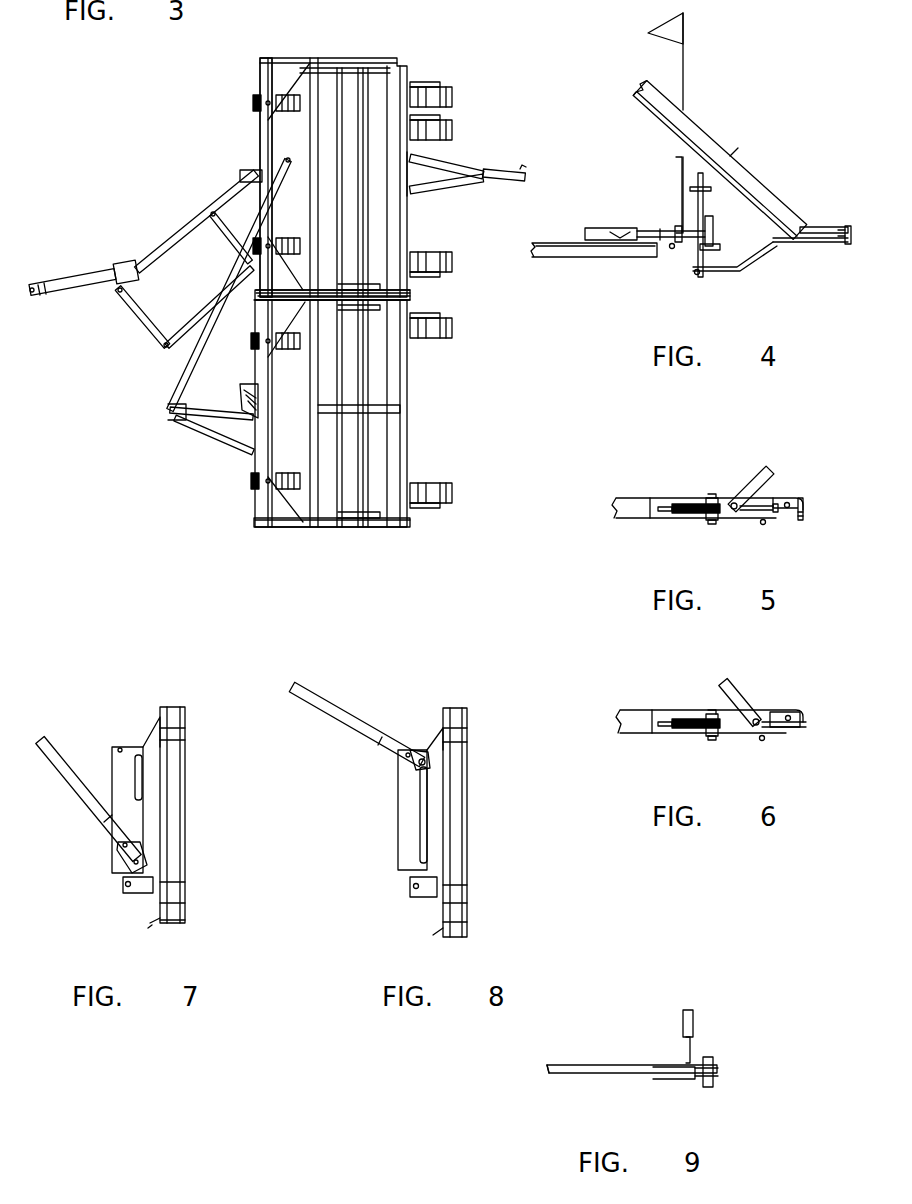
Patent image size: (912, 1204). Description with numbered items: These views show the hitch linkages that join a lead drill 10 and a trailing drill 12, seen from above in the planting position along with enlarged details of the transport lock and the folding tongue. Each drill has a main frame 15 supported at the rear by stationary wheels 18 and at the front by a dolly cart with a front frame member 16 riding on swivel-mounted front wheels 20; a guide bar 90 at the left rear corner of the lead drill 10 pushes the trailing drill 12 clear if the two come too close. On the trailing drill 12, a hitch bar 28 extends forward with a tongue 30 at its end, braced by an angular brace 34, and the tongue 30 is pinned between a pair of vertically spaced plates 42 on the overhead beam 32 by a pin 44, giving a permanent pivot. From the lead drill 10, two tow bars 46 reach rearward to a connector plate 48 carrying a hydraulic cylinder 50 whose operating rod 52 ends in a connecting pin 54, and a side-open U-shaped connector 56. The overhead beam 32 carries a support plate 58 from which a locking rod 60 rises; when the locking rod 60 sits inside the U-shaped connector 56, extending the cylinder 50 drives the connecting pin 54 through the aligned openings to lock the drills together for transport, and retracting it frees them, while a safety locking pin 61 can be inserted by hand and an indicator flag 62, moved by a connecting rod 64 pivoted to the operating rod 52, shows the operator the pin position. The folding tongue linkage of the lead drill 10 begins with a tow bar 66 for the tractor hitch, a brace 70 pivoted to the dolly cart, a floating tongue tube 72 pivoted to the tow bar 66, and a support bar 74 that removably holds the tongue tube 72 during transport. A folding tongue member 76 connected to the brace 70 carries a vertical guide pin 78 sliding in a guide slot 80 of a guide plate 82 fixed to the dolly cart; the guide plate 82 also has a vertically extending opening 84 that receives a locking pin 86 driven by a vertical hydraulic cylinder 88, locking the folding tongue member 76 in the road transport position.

In FIG. 3, the lead drill 10 is at (378, 48).
In FIG. 3, the trailing drill 12 is at (418, 382).
In FIG. 3, the main frame 15 is at (258, 150).
In FIG. 3, the front frame member 16 is at (258, 82).
In FIG. 7, the front frame member 16 is at (180, 838).
In FIG. 8, the front frame member 16 is at (460, 804).
In FIG. 3, the stationary wheels 18 is at (453, 96).
In FIG. 3, the front wheels 20 is at (292, 112).
In FIG. 3, the hitch bar 28 is at (200, 414).
In FIG. 3, the tongue 30 is at (246, 394).
In FIG. 3, the overhead beam 32 is at (180, 397).
In FIG. 4, the overhead beam 32 is at (760, 176).
In FIG. 3, the brace 34 is at (230, 438).
In FIG. 4, the plates 42 is at (822, 222).
In FIG. 4, the pin 44 is at (846, 246).
In FIG. 3, the tow bars 46 is at (462, 160).
In FIG. 3, the connector plate 48 is at (516, 170).
In FIG. 4, the connector plate 48 is at (570, 244).
In FIG. 5, the connector plate 48 is at (664, 498).
In FIG. 6, the connector plate 48 is at (668, 738).
In FIG. 4, the hydraulic cylinder 50 is at (602, 230).
In FIG. 5, the hydraulic cylinder 50 is at (692, 518).
In FIG. 6, the hydraulic cylinder 50 is at (682, 710).
In FIG. 5, the operating rod 52 is at (726, 498).
In FIG. 6, the operating rod 52 is at (734, 738).
In FIG. 4, the connecting pin 54 is at (664, 232).
In FIG. 5, the connecting pin 54 is at (760, 504).
In FIG. 6, the connecting pin 54 is at (786, 732).
In FIG. 4, the U-shaped connector 56 is at (710, 248).
In FIG. 5, the U-shaped connector 56 is at (812, 500).
In FIG. 4, the support plate 58 is at (728, 274).
In FIG. 4, the locking rod 60 is at (692, 262).
In FIG. 5, the locking rod 60 is at (788, 514).
In FIG. 6, the locking rod 60 is at (790, 716).
In FIG. 4, the safety locking pin 61 is at (718, 212).
In FIG. 4, the indicator flag 62 is at (688, 60).
In FIG. 5, the connecting rod 64 is at (748, 475).
In FIG. 6, the connecting rod 64 is at (738, 680).
In FIG. 3, the tow bar 66 is at (76, 282).
In FIG. 3, the brace 70 is at (170, 222).
In FIG. 3, the floating tongue tube 72 is at (140, 320).
In FIG. 3, the support bar 74 is at (210, 302).
In FIG. 7, the support bar 74 is at (126, 892).
In FIG. 8, the support bar 74 is at (410, 884).
In FIG. 3, the folding tongue member 76 is at (222, 248).
In FIG. 7, the folding tongue member 76 is at (70, 788).
In FIG. 8, the folding tongue member 76 is at (330, 700).
In FIG. 9, the folding tongue member 76 is at (572, 1064).
In FIG. 7, the vertical guide pin 78 is at (118, 868).
In FIG. 8, the vertical guide pin 78 is at (412, 748).
In FIG. 9, the vertical guide pin 78 is at (712, 1056).
In FIG. 7, the guide slot 80 is at (132, 782).
In FIG. 8, the guide slot 80 is at (420, 838).
In FIG. 7, the guide plate 82 is at (112, 750).
In FIG. 8, the guide plate 82 is at (400, 792).
In FIG. 7, the vertically extending opening 84 is at (120, 748).
In FIG. 9, the locking pin 86 is at (680, 1080).
In FIG. 9, the hydraulic cylinder 88 is at (678, 1020).
In FIG. 3, the guide bar 90 is at (420, 292).